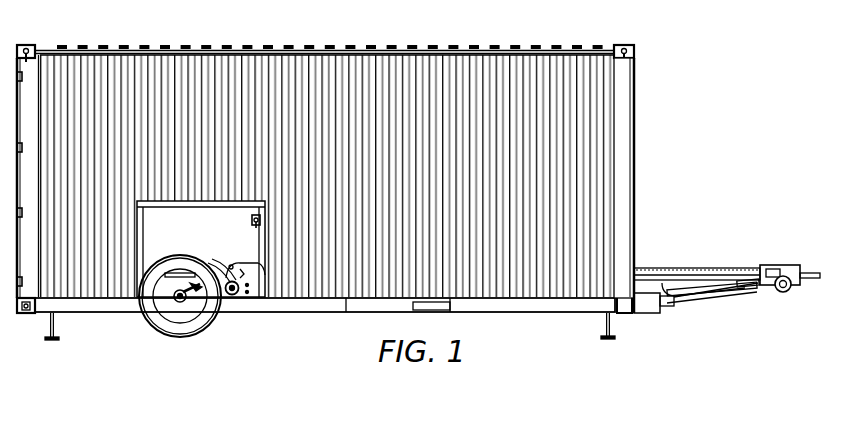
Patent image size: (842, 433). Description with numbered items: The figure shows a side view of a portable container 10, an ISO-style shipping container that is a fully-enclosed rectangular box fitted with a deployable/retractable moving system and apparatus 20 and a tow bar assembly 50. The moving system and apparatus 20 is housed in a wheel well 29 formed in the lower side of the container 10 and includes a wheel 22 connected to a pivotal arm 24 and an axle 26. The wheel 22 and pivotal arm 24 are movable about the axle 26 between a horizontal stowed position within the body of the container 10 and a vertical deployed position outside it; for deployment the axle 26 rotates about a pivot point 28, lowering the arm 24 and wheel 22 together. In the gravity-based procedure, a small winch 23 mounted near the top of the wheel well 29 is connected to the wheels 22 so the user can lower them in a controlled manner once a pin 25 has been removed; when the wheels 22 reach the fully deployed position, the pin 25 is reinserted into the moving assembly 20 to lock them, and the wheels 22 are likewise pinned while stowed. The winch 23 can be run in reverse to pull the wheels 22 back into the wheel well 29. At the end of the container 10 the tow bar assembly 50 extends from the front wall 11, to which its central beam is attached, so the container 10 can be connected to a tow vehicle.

The portable container 10 is at (667, 78).
The front wall 11 is at (637, 172).
The deployable/retractable moving system and apparatus 20 is at (186, 302).
The wheels 22 is at (185, 338).
The winch 23 is at (252, 220).
The pivotal arm 24 is at (183, 273).
The pin 25 is at (242, 270).
The axle 26 is at (237, 300).
The pivot point 28 is at (218, 262).
The wheel well 29 is at (168, 232).
The tow bar assembly 50 is at (768, 249).